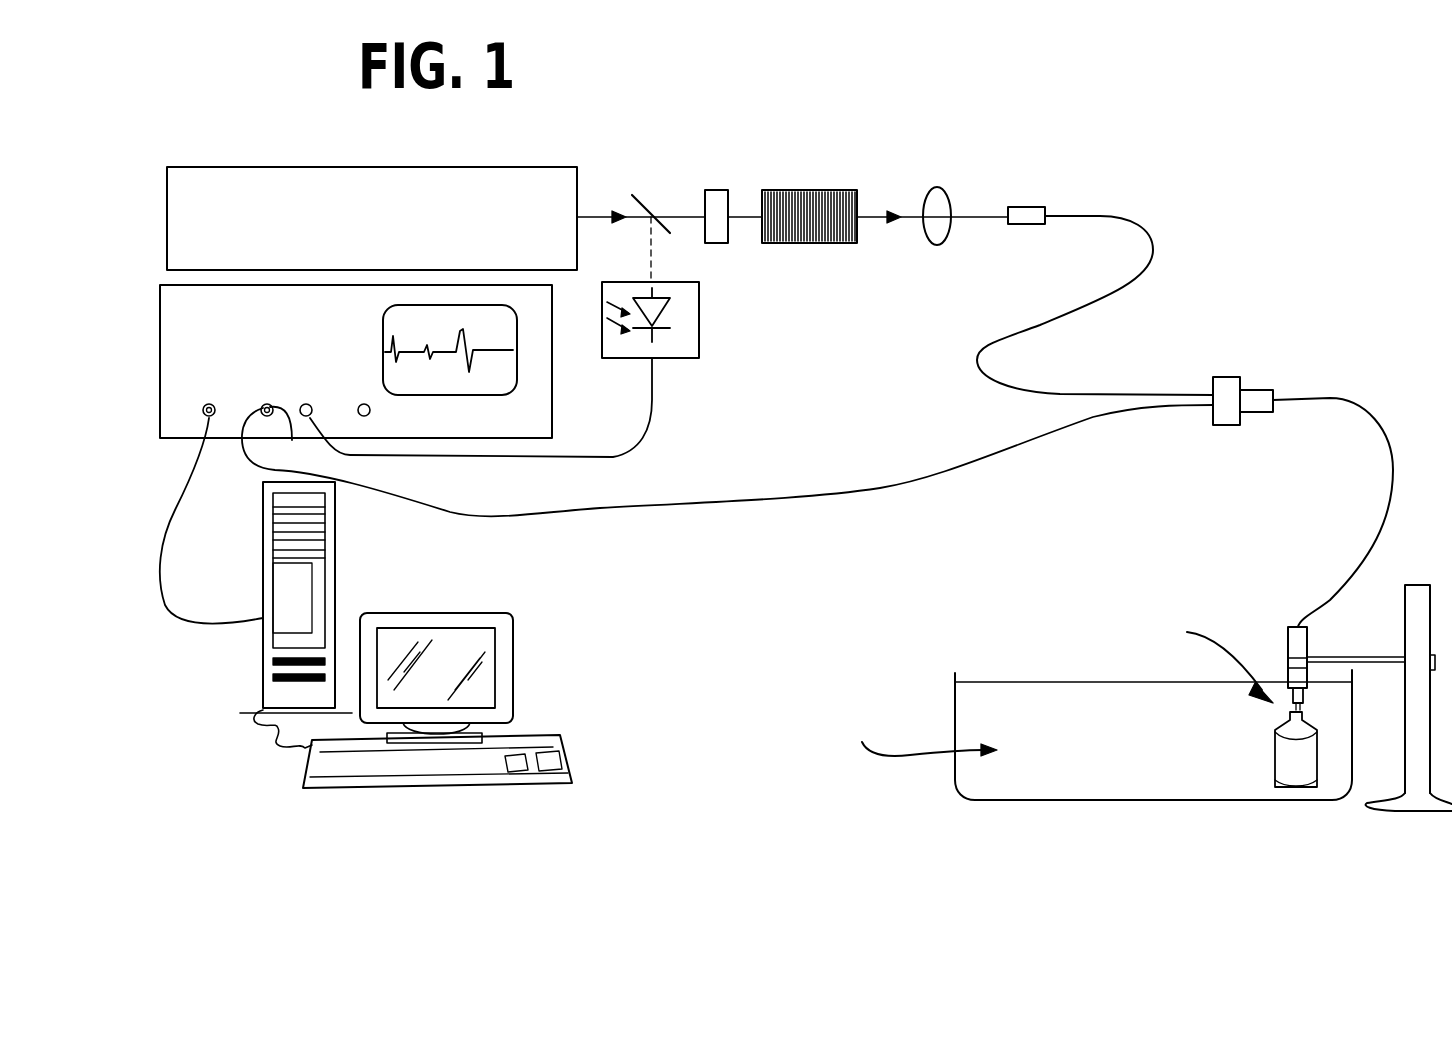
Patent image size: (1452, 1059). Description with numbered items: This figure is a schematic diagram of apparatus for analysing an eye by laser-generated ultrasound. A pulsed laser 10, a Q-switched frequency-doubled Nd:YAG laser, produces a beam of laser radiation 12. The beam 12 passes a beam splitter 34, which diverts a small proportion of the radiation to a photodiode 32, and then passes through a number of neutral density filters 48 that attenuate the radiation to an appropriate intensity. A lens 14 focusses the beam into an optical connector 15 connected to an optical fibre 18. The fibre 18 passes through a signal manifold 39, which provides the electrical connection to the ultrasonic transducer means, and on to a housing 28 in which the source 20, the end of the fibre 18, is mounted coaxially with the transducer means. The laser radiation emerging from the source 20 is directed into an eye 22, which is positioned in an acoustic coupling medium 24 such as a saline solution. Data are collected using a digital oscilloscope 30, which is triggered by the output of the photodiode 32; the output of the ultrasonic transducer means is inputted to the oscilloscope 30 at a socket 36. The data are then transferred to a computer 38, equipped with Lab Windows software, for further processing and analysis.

The pulsed laser 10 is at (522, 178).
The beam of laser radiation 12 is at (590, 215).
The beam splitter 34 is at (646, 205).
The neutral density filters 48 is at (757, 195).
The lens 14 is at (950, 233).
The optical connector 15 is at (1035, 225).
The optical fibre 18 is at (1153, 250).
The digital oscilloscope 30 is at (188, 371).
The photodiode 32 is at (673, 362).
The socket 36 is at (727, 460).
The computer 38 is at (353, 603).
The signal manifold 39 is at (1262, 382).
The housing 28 is at (1280, 645).
The source 20 is at (1283, 698).
The eye 22 is at (1285, 713).
The acoustic coupling medium 24 is at (1022, 782).